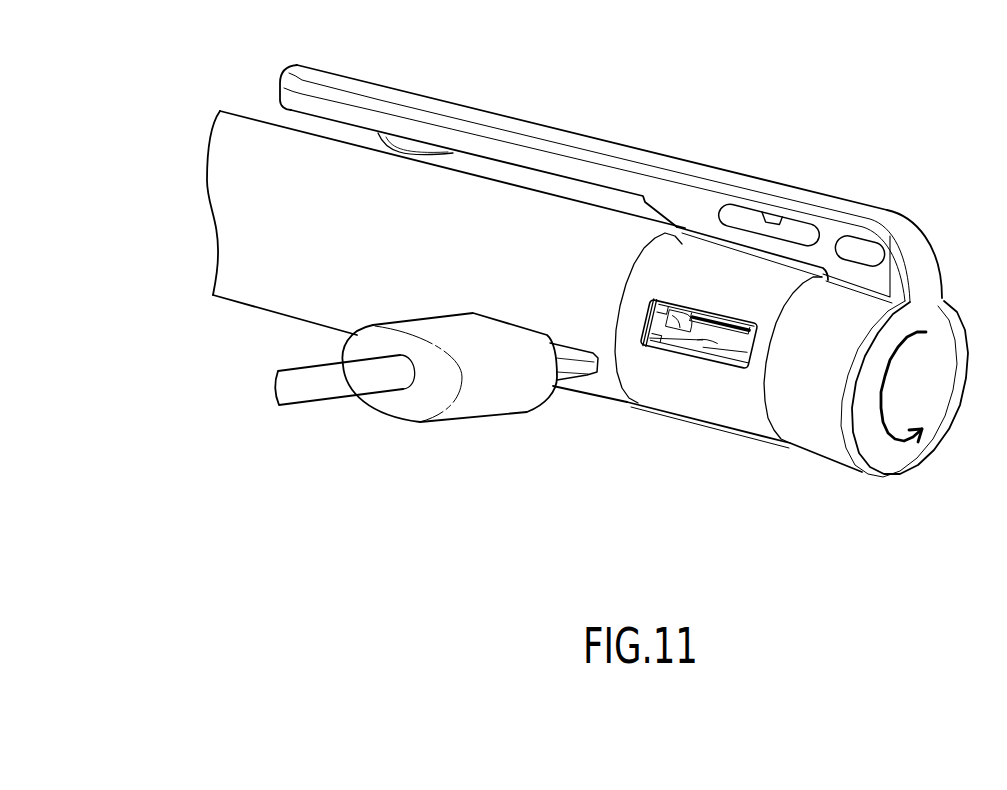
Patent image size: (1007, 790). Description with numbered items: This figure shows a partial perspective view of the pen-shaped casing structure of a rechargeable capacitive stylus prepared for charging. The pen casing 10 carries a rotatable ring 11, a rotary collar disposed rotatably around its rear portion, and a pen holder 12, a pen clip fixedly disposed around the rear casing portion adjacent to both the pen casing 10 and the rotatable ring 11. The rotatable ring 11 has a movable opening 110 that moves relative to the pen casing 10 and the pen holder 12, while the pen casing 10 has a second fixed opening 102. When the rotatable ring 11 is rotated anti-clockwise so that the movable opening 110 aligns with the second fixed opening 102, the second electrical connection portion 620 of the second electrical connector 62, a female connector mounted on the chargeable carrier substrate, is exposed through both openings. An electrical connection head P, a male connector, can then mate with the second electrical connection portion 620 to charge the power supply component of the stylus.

The pen casing 10 is at (467, 190).
The rotatable ring 11 is at (780, 283).
The pen holder 12 is at (686, 170).
The movable opening 110 is at (702, 306).
The second electrical connector 62 is at (643, 327).
The second electrical connection portion 620 is at (723, 357).
The second fixed opening 102 is at (653, 337).
The electrical connection head P is at (486, 415).